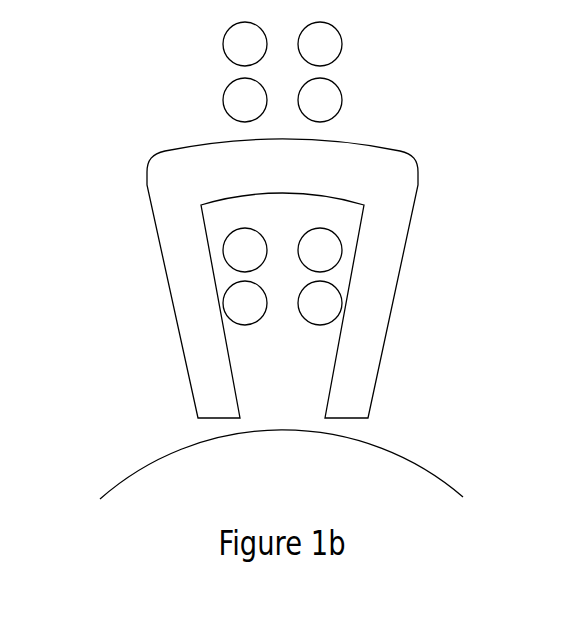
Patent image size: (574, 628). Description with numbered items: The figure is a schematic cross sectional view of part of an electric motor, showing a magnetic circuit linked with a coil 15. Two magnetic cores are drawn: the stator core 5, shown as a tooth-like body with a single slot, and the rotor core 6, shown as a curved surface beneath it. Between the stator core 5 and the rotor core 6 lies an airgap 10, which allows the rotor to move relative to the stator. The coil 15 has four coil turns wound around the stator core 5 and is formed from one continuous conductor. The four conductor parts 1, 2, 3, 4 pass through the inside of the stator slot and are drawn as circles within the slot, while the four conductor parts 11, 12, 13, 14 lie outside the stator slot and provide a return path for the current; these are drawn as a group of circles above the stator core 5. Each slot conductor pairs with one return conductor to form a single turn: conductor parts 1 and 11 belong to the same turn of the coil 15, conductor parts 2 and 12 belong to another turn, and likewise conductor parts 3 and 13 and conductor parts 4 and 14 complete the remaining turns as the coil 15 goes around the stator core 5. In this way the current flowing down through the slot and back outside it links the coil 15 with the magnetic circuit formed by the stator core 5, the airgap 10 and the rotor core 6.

The conductor part 1 is at (223, 249).
The conductor part 2 is at (223, 303).
The conductor part 3 is at (342, 250).
The conductor part 4 is at (342, 303).
The stator core 5 is at (147, 183).
The rotor core 6 is at (177, 450).
The airgap 10 is at (352, 427).
The conductor part 11 is at (223, 100).
The conductor part 12 is at (223, 44).
The conductor part 13 is at (342, 100).
The conductor part 14 is at (342, 44).
The coil 15 is at (130, 70).